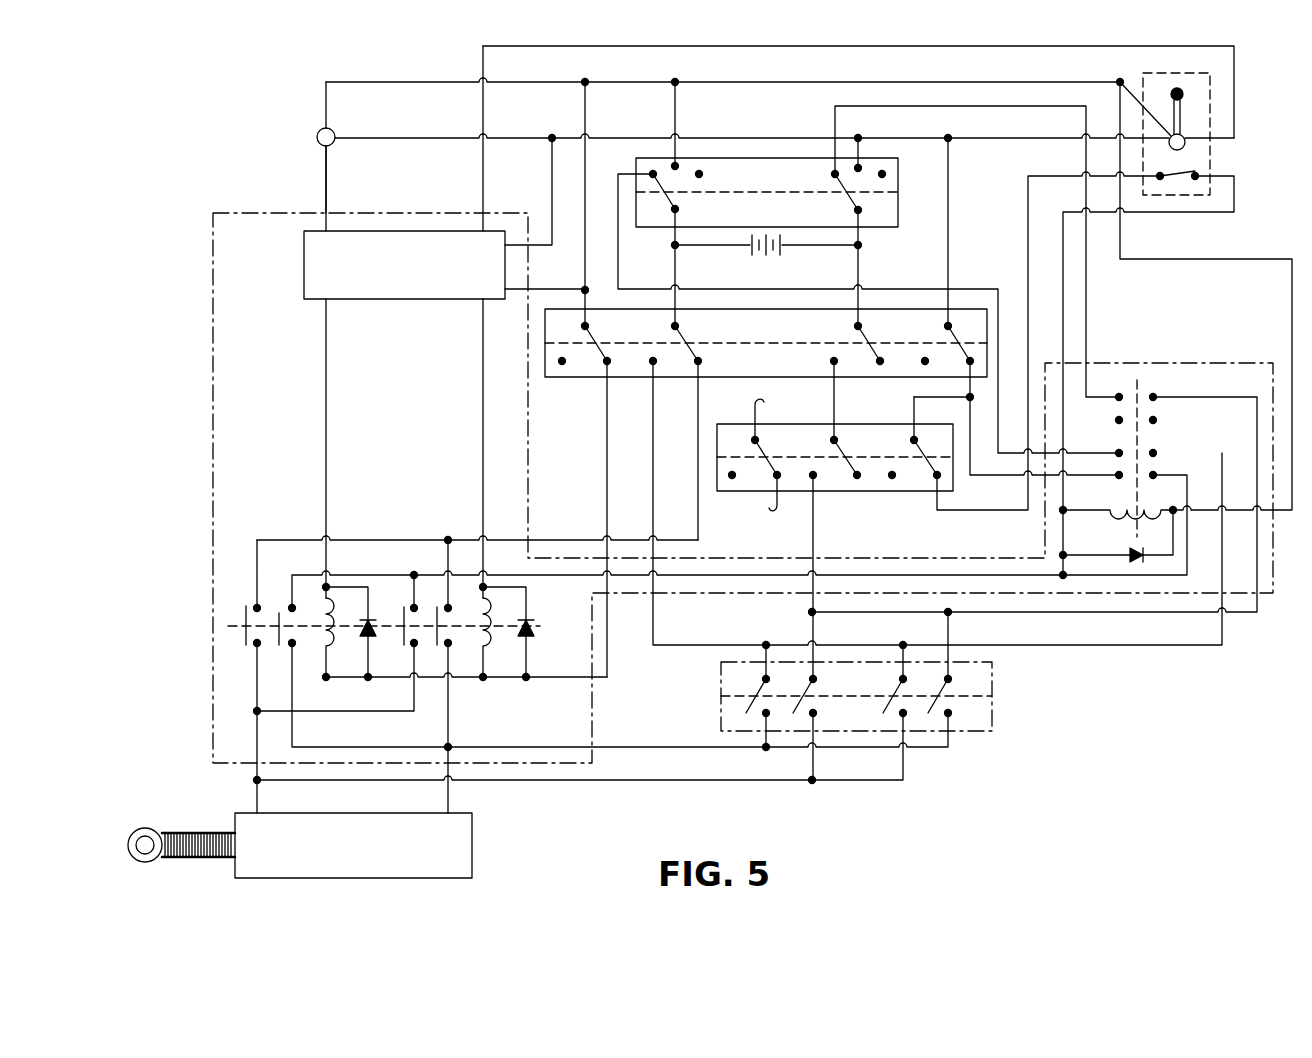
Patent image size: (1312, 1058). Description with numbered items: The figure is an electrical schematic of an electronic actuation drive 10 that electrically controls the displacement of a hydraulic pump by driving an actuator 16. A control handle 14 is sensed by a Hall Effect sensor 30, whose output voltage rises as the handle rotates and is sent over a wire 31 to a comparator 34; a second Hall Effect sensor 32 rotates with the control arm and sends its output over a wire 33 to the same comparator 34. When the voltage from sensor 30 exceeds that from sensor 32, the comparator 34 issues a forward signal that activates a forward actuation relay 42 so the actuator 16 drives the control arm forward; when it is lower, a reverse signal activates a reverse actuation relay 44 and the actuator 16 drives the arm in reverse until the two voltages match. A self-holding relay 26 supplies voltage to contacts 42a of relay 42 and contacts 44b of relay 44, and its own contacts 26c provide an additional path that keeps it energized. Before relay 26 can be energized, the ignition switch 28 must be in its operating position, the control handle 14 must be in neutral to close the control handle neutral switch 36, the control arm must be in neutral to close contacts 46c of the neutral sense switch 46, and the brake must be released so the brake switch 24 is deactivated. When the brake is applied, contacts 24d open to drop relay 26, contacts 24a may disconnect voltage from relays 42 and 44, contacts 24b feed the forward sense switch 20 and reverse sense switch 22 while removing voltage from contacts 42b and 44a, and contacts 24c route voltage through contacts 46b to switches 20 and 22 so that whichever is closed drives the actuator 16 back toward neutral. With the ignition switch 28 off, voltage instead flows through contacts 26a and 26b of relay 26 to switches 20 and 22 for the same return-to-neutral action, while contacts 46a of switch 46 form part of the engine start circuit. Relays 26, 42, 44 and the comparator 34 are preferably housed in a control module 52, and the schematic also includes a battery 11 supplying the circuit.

The electronic actuation drive 10 is at (1096, 740).
The battery 11 is at (783, 251).
The control handle 14 is at (1184, 97).
The actuator 16 is at (472, 830).
The forward sense switch 20 is at (720, 680).
The reverse sense switch 22 is at (992, 690).
The brake switch 24 is at (774, 345).
The contacts of brake switch 24a is at (585, 370).
The contacts of brake switch 24b is at (693, 340).
The contacts of brake switch 24c is at (832, 357).
The contacts of brake switch 24d is at (928, 340).
The self-holding relay 26 is at (1153, 474).
The contacts of relay 26a is at (1162, 394).
The contacts of relay 26b is at (1116, 449).
The contacts of relay 26c is at (1162, 470).
The ignition switch 28 is at (898, 212).
The Hall Effect sensor 30 is at (1186, 146).
The wire 31 is at (1200, 153).
The Hall Effect sensor 32 is at (320, 130).
The wire 33 is at (326, 181).
The comparator 34 is at (304, 268).
The control handle neutral switch 36 is at (1186, 190).
The forward actuation relay 42 is at (263, 608).
The contacts of forward actuation relay 42a is at (288, 600).
The contacts of forward actuation relay 42b is at (250, 604).
The reverse actuation relay 44 is at (454, 630).
The contacts of reverse actuation relay 44a is at (456, 650).
The contacts of reverse actuation relay 44b is at (412, 600).
The neutral sense switch 46 is at (845, 472).
The contacts of neutral sense switch 46a is at (755, 495).
The contacts of neutral sense switch 46b is at (835, 495).
The contacts of neutral sense switch 46c is at (913, 495).
The control module 52 is at (212, 318).